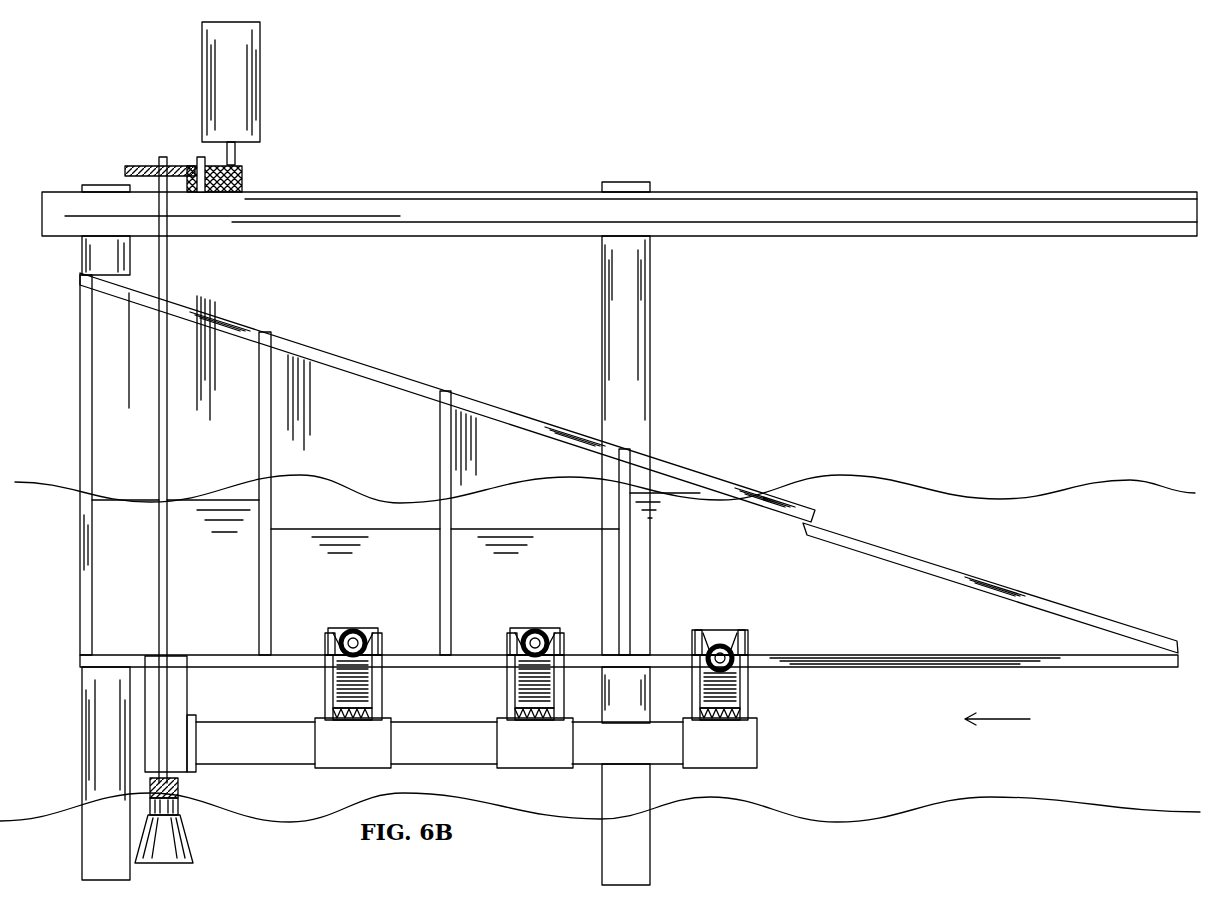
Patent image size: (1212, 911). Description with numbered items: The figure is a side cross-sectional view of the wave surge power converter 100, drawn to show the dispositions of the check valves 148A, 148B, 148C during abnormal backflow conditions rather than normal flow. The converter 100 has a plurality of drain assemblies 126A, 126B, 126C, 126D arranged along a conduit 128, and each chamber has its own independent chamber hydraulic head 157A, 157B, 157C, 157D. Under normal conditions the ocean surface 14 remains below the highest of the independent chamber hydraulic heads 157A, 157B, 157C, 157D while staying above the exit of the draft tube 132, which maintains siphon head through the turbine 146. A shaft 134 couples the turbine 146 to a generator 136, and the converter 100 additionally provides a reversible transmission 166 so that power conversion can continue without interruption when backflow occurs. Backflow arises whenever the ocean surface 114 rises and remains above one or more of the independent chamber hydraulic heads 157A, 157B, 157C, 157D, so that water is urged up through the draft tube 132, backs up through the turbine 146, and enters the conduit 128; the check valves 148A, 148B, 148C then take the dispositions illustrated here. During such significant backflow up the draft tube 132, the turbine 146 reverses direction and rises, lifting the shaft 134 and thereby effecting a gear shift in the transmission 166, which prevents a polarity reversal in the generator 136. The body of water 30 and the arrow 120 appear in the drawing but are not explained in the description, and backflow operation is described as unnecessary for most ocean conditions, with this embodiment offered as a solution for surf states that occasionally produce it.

The generator 136 is at (203, 72).
The reversible transmission 166 is at (140, 138).
The shaft 134 is at (168, 268).
The wave surge power converter apparatus 100 is at (802, 342).
The ocean surface 114 is at (973, 497).
The body of water 30 is at (1038, 555).
The ocean surface 14 is at (903, 810).
The independent chamber hydraulic head 157A is at (676, 502).
The independent chamber hydraulic head 157B is at (558, 519).
The independent chamber hydraulic head 157C is at (388, 519).
The independent chamber hydraulic head 157D is at (187, 510).
The check valve 148A is at (700, 650).
The check valve 148B is at (516, 640).
The check valve 148C is at (334, 640).
The drain assembly 126A is at (742, 688).
The drain assembly 126B is at (520, 686).
The drain assembly 126C is at (337, 685).
The drain assembly 126D is at (187, 707).
The conduit 128 is at (463, 755).
The flow direction 120 is at (1030, 719).
The turbine 146 is at (178, 793).
The draft tube 132 is at (170, 864).